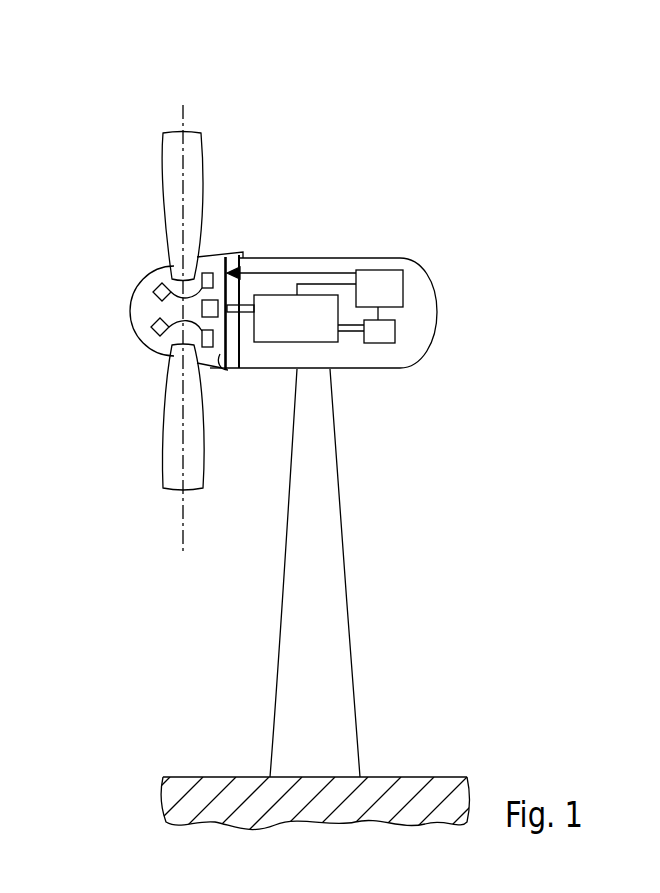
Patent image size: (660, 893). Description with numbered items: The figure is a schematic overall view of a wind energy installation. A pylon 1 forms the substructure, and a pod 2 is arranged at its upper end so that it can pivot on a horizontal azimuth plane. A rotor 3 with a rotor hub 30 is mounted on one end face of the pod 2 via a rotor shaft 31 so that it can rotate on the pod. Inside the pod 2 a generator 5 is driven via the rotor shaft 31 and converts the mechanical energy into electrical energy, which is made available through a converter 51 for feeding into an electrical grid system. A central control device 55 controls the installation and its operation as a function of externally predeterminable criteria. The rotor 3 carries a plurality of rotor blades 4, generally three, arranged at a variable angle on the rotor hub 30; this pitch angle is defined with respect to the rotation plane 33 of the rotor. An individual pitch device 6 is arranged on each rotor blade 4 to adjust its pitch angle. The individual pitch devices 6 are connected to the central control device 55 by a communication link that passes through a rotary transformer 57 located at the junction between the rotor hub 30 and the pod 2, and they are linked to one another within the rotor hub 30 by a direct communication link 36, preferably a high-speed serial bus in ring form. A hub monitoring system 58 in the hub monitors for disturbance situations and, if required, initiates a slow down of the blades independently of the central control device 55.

The pylon 1 is at (332, 613).
The pod 2 is at (408, 366).
The rotor 3 is at (133, 261).
The rotor blade 4 is at (168, 170).
The generator 5 is at (285, 340).
The individual pitch device 6 is at (207, 273).
The rotor hub 30 is at (142, 333).
The rotor shaft 31 is at (247, 320).
The rotation plane 33 is at (183, 535).
The direct communication link 36 is at (220, 358).
The converter 51 is at (390, 332).
The central control device 55 is at (398, 280).
The rotary transformer 57 is at (236, 255).
The hub monitoring system 58 is at (202, 309).